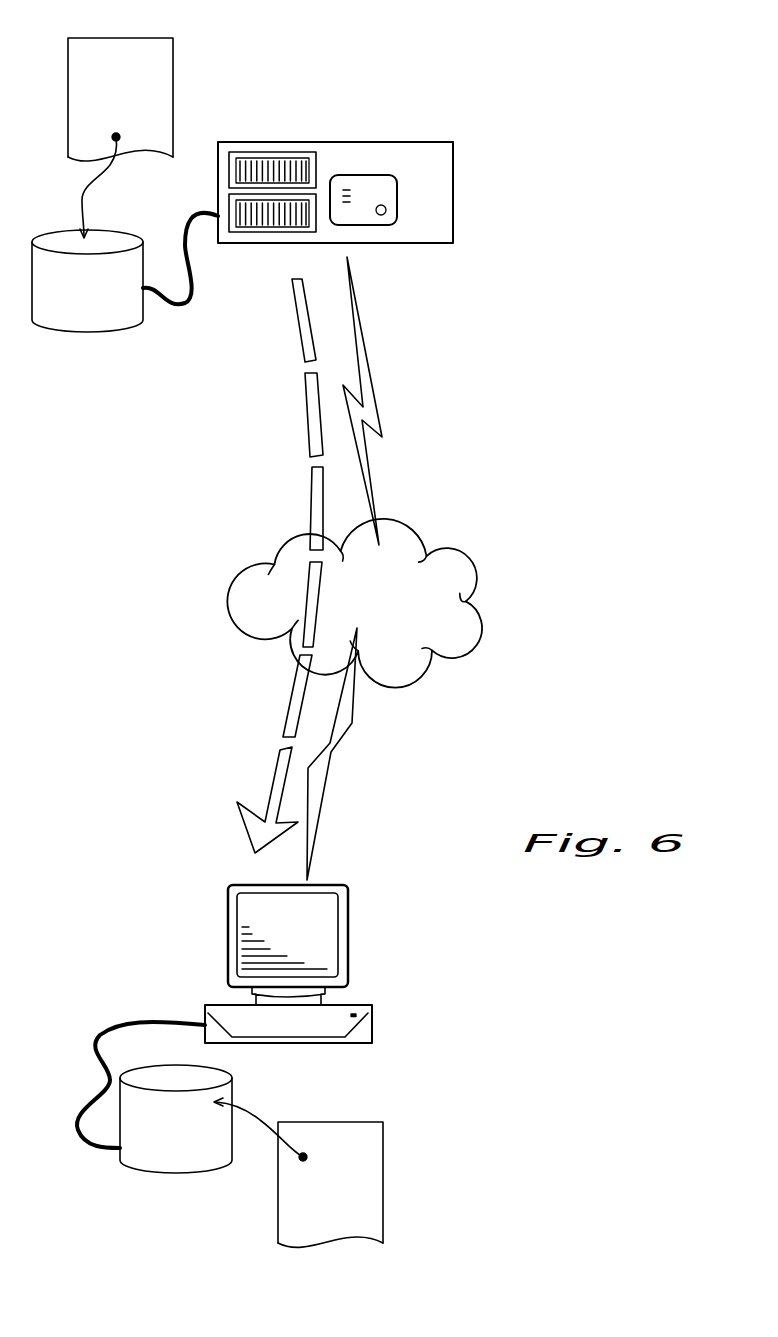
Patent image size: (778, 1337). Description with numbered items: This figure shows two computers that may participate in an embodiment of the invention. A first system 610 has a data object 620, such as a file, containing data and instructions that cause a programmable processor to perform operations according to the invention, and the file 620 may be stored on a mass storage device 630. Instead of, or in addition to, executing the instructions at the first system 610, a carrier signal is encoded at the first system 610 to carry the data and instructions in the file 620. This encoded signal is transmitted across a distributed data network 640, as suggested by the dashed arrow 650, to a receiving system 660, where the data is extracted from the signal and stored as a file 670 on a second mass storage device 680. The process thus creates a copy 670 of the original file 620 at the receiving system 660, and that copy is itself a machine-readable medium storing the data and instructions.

The first system 610 is at (453, 243).
The data object 620 is at (173, 55).
The mass storage device 630 is at (135, 317).
The distributed data network 640 is at (453, 636).
The dashed arrow 650 is at (312, 476).
The receiving system 660 is at (365, 1003).
The copy of file 670 is at (383, 1222).
The mass storage device 680 is at (223, 1157).